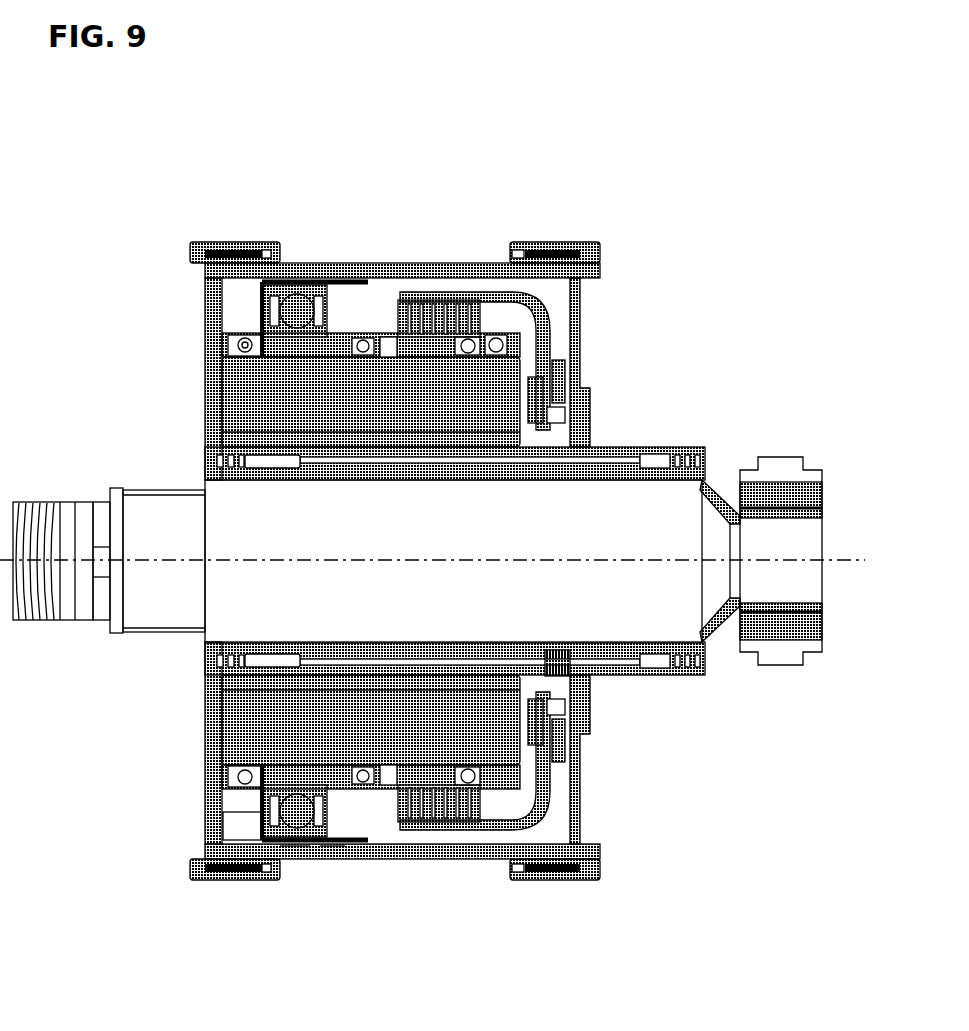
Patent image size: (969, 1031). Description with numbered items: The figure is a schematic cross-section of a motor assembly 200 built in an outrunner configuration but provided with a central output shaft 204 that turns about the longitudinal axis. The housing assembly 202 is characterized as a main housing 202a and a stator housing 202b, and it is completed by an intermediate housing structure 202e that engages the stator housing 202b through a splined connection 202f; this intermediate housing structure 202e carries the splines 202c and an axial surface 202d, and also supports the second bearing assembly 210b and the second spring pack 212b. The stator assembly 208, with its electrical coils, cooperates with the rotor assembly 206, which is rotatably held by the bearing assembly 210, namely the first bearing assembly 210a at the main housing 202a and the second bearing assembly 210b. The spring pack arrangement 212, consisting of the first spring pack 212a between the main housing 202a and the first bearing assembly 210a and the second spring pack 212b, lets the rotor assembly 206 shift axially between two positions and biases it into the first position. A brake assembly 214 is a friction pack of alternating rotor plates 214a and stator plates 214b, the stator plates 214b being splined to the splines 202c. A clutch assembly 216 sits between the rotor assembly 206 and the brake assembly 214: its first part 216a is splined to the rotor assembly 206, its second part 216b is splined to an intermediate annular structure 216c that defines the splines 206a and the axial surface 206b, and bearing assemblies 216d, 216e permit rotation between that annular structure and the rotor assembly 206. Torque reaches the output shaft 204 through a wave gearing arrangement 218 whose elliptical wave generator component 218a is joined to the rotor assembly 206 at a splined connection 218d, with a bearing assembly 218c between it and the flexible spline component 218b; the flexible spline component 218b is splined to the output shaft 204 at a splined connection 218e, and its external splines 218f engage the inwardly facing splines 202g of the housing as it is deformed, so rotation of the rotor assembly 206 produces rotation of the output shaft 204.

The motor assembly 200 is at (80, 263).
The motor housing assembly 202 is at (227, 245).
The main housing 202a is at (272, 243).
The stator housing 202b is at (212, 438).
The splines 202c is at (418, 813).
The axial surface 202d is at (470, 810).
The intermediate housing structure 202e is at (523, 767).
The splined connection 202f is at (548, 687).
The inwardly facing splines 202g is at (347, 850).
The output shaft 204 is at (803, 587).
The rotor assembly 206 is at (260, 767).
The splines 206a is at (437, 797).
The axial surface 206b is at (368, 842).
The stator assembly 208 is at (233, 725).
The bearing assembly 210 is at (232, 338).
The first bearing assembly 210a is at (228, 340).
The second bearing assembly 210b is at (507, 333).
The spring pack arrangement 212 is at (220, 342).
The first spring pack 212a is at (220, 348).
The second spring pack 212b is at (513, 348).
The brake assembly 214 is at (393, 803).
The rotor plates 214a is at (463, 813).
The stator plates 214b is at (457, 810).
The clutch assembly 216 is at (405, 343).
The first part 216a is at (438, 350).
The second part 216b is at (417, 340).
The intermediate annular structure 216c is at (388, 337).
The bearing assembly 216d is at (463, 347).
The bearing assembly 216e is at (363, 348).
The wave gearing arrangement 218 is at (253, 822).
The wave generator component 218a is at (268, 782).
The flexible spline component 218b is at (330, 845).
The bearing assembly 218c is at (297, 820).
The splined connection 218d is at (265, 780).
The splined connection 218e is at (557, 658).
The external splines 218f is at (297, 845).